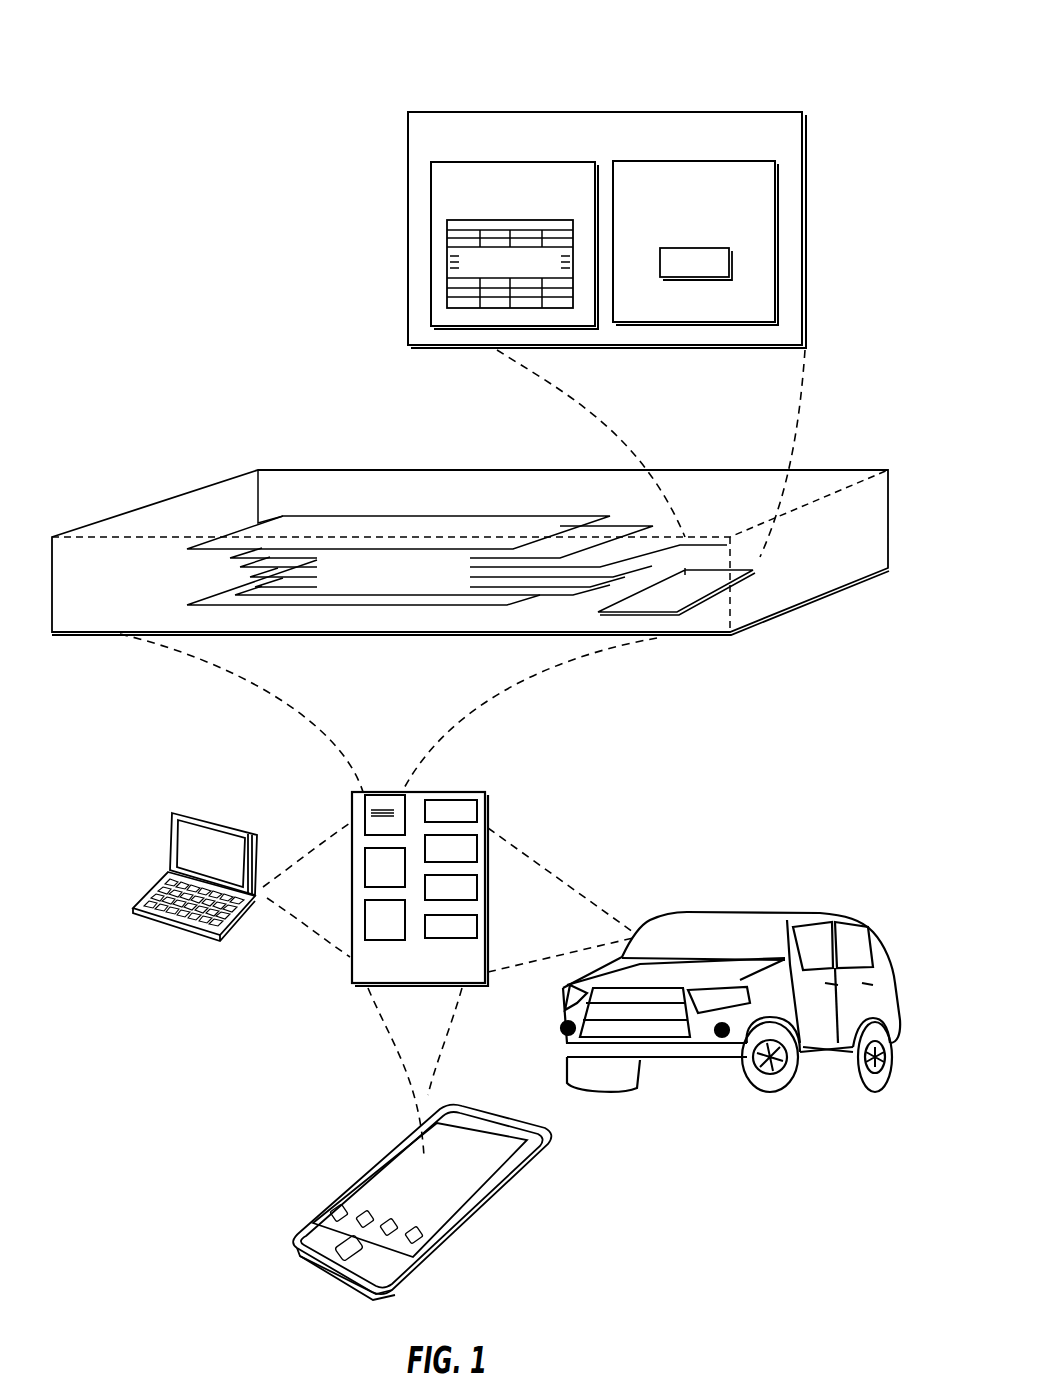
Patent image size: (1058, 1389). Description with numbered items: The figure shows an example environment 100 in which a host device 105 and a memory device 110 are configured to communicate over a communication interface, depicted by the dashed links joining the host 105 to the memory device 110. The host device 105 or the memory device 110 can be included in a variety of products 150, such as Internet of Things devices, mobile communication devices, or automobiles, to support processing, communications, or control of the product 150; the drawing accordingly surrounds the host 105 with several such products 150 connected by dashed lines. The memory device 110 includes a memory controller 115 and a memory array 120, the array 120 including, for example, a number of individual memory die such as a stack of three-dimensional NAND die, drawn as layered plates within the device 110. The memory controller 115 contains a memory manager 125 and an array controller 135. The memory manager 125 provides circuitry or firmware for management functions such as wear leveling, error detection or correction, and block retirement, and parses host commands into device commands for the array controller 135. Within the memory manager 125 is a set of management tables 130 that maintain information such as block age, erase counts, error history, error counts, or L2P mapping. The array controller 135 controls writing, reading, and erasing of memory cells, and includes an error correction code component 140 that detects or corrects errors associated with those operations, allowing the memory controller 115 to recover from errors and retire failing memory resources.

The environment 100 is at (778, 36).
The host device 105 is at (350, 793).
The memory device 110 is at (202, 488).
The memory controller 115 is at (407, 111).
The memory array 120 is at (470, 516).
The memory manager 125 is at (431, 196).
The management tables 130 is at (446, 257).
The array controller 135 is at (778, 195).
The error correction code (ECC) component 140 is at (731, 264).
The products 150 is at (177, 812).